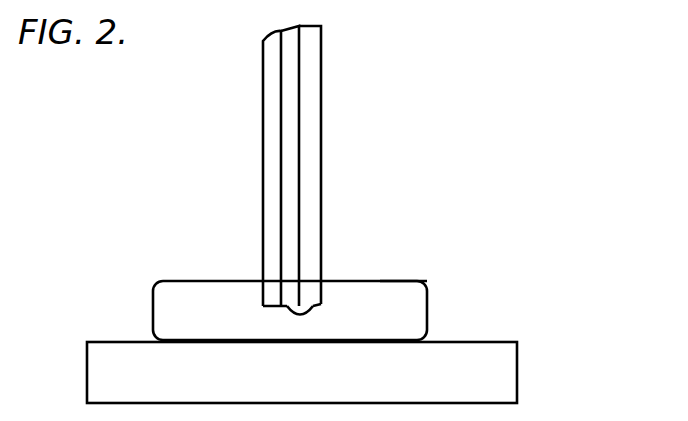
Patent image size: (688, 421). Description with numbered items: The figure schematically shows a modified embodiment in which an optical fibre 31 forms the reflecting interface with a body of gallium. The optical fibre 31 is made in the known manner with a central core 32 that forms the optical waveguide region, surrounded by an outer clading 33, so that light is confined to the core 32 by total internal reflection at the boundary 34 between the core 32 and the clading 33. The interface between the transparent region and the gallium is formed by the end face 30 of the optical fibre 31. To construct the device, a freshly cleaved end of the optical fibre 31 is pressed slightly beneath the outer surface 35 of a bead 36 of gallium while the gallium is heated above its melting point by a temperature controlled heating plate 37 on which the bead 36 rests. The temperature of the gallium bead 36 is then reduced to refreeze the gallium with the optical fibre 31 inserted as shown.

The end face 30 is at (313, 306).
The optical fibre 31 is at (318, 134).
The central core 32 is at (290, 92).
The outer clading 33 is at (310, 53).
The boundary 34 is at (273, 133).
The outer surface 35 is at (390, 282).
The bead 36 is at (172, 293).
The temperature controlled heating plate 37 is at (500, 371).